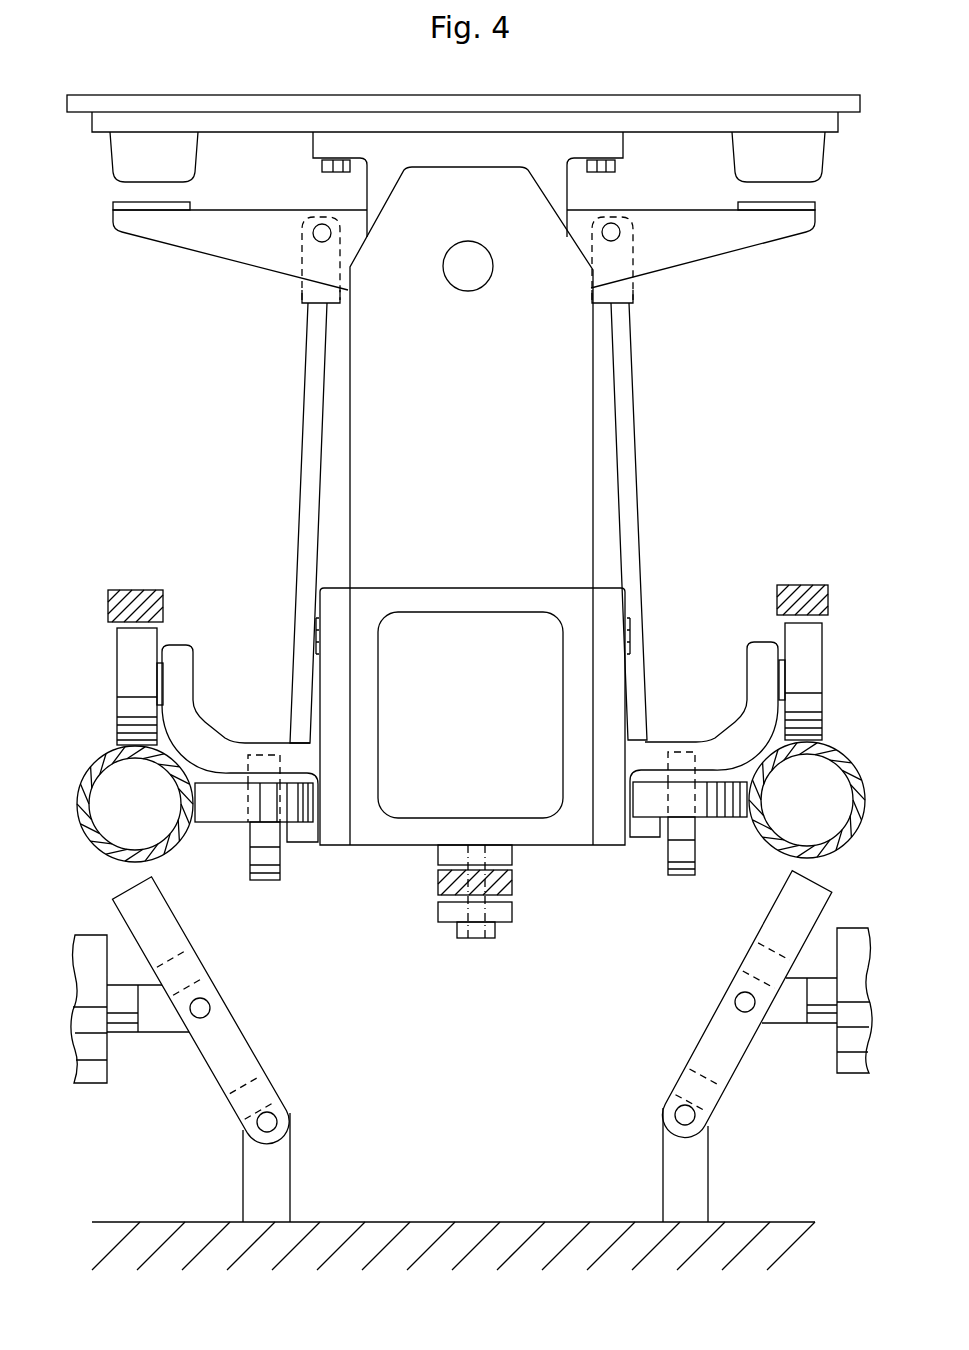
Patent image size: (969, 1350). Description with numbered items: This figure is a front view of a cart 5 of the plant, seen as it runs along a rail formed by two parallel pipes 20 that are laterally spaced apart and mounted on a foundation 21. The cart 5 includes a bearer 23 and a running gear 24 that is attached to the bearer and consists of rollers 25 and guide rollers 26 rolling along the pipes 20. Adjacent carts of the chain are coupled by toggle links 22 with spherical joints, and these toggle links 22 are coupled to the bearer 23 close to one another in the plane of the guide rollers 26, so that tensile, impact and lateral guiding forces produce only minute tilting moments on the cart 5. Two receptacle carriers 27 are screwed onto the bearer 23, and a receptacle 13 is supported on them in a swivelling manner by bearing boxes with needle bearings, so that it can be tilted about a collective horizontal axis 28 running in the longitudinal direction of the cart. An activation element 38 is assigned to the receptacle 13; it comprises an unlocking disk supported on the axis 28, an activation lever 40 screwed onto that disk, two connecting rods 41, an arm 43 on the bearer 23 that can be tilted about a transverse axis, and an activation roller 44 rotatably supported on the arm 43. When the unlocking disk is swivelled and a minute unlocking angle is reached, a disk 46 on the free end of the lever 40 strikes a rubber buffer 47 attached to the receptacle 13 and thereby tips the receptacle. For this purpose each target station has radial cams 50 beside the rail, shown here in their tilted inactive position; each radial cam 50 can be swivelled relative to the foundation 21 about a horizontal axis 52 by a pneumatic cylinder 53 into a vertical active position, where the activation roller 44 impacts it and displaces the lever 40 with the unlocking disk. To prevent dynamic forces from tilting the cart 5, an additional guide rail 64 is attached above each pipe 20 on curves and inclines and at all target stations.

The cart 5 is at (247, 423).
The receptacle 13 is at (245, 103).
The pipe 20 is at (107, 858).
The foundation 21 is at (478, 1213).
The toggle link 22 is at (440, 887).
The bearer 23 is at (462, 598).
The running gear 24 is at (237, 663).
The roller 25 is at (128, 662).
The guide roller 26 is at (227, 810).
The receptacle carrier 27 is at (500, 192).
The horizontal axis 28 is at (458, 260).
The activation element 38 is at (664, 576).
The activation lever 40 is at (250, 248).
The connecting rod 41 is at (308, 500).
The arm 43 is at (305, 838).
The activation roller 44 is at (270, 882).
The disk 46 is at (175, 205).
The rubber buffer 47 is at (147, 148).
The radial cam 50 is at (170, 935).
The horizontal axis 52 is at (278, 1116).
The pneumatic cylinder 53 is at (98, 1065).
The additional guide rail 64 is at (123, 587).